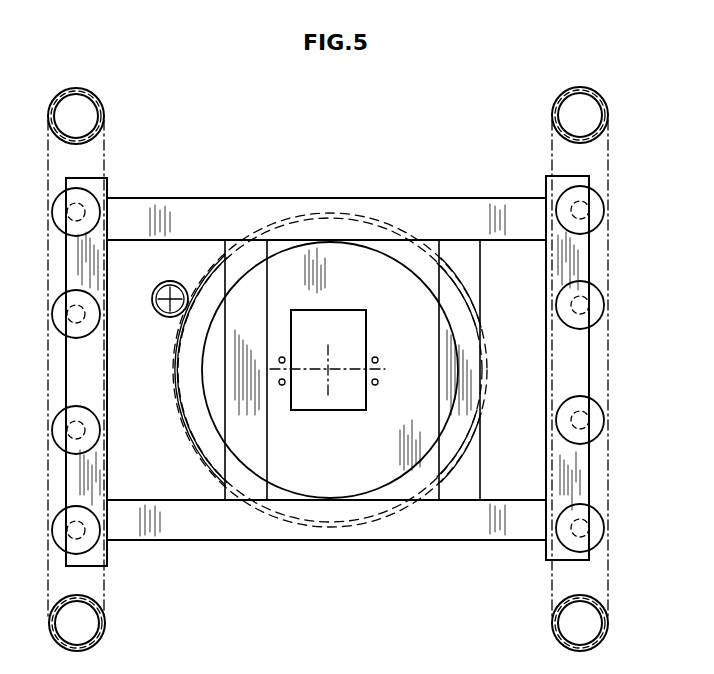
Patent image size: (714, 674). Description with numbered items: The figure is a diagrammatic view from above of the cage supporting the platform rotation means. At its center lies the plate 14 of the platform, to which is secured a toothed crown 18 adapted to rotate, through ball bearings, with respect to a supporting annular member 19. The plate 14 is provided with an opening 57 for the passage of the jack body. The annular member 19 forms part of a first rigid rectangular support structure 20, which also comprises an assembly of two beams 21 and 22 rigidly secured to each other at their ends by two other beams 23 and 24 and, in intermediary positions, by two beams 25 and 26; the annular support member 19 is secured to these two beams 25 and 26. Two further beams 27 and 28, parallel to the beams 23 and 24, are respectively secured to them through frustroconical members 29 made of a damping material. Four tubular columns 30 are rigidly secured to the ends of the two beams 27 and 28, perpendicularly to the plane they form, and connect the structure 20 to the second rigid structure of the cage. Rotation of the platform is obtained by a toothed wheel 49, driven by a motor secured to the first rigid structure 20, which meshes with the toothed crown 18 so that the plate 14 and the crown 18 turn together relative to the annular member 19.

The plate 14 is at (338, 265).
The toothed crown 18 is at (172, 380).
The supporting annular member 19 is at (198, 418).
The first rigid rectangular support structure 20 is at (466, 92).
The beam 21 is at (200, 535).
The beam 22 is at (219, 205).
The beam 23 is at (66, 254).
The beam 24 is at (587, 255).
The beam 25 is at (252, 485).
The beam 26 is at (466, 485).
The beam 27 is at (46, 170).
The beam 28 is at (609, 164).
The frustroconical members 29 is at (57, 300).
The tubular columns 30 is at (48, 114).
The toothed wheel 49 is at (160, 318).
The opening 57 is at (324, 400).